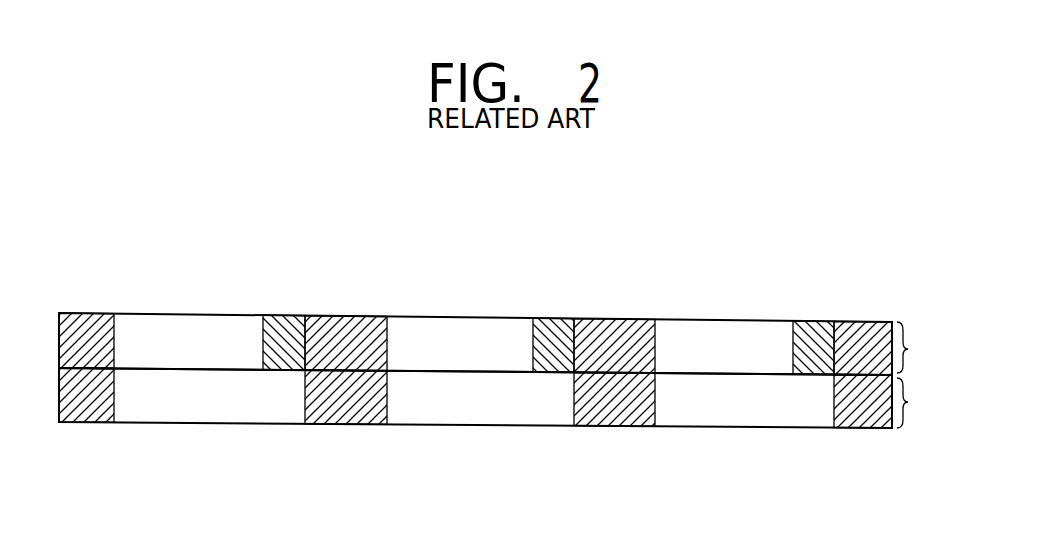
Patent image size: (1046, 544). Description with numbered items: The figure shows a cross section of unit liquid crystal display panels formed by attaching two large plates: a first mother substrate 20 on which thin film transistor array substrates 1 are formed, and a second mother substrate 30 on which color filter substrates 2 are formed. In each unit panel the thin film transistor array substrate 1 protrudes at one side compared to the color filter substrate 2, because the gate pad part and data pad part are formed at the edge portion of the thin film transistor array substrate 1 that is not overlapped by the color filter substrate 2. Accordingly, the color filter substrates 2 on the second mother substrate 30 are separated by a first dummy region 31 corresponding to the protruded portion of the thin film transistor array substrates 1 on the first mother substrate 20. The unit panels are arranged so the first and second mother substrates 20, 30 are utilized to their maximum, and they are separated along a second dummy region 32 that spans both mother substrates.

The thin film transistor array substrate 1 is at (190, 415).
The color filter substrate 2 is at (192, 318).
The first mother substrate 20 is at (914, 403).
The second mother substrate 30 is at (914, 347).
The first dummy region 31 is at (286, 318).
The second dummy region 32 is at (92, 313).